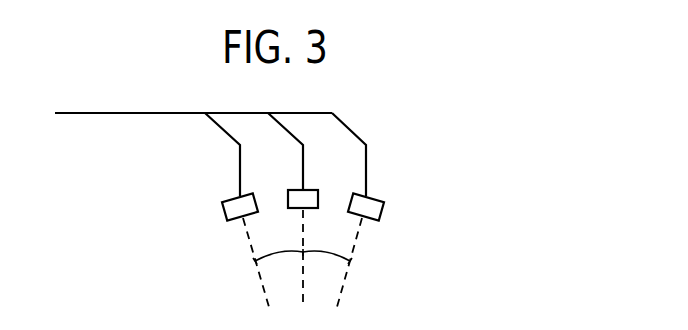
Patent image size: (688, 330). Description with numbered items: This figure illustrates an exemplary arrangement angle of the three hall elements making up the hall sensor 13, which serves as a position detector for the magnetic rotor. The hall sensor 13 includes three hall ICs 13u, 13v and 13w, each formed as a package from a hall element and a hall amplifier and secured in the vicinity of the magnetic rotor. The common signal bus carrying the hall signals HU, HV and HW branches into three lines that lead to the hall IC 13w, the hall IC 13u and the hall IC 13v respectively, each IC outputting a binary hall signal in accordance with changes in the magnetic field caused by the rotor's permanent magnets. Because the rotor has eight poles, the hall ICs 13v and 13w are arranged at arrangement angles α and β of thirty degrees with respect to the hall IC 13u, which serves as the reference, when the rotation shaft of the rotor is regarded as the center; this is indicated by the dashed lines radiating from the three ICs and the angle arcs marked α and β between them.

The hall sensor 13 is at (274, 197).
The hall IC 13u is at (310, 192).
The hall IC 13v is at (385, 208).
The hall IC 13w is at (222, 209).